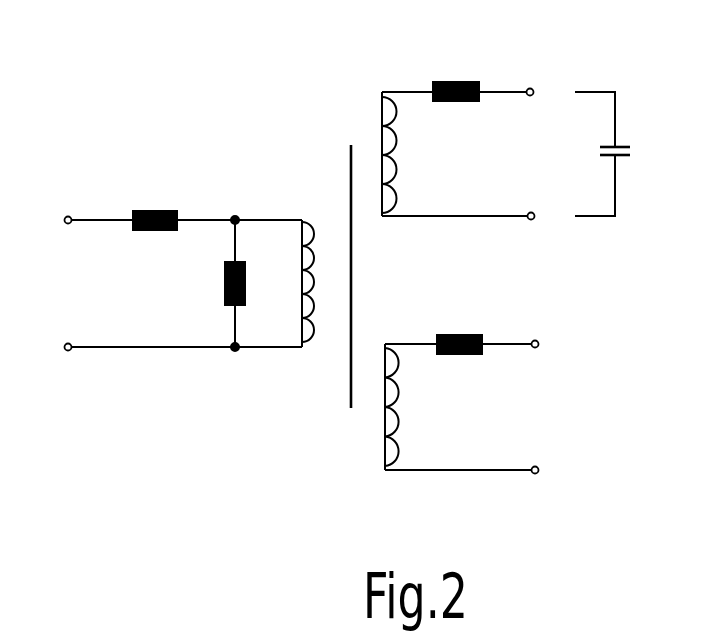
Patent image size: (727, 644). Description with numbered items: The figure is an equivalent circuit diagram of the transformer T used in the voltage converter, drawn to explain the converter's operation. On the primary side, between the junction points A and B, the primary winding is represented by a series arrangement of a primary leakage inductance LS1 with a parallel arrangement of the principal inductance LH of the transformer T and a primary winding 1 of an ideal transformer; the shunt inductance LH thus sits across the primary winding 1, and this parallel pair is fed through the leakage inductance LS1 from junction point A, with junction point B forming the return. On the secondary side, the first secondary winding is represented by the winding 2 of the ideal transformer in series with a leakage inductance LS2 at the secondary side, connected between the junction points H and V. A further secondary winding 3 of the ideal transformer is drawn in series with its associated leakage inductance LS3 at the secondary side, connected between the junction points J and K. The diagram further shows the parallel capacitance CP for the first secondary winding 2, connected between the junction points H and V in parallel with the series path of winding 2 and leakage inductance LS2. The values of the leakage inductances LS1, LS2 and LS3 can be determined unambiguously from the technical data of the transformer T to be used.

The primary winding 1 is at (305, 273).
The first secondary winding 2 is at (392, 172).
The further secondary winding 3 is at (399, 408).
The transformer T is at (344, 240).
The primary leakage inductance LS1 is at (217, 196).
The leakage inductance at the secondary side LS2 is at (479, 66).
The leakage inductance at the secondary side LS3 is at (484, 320).
The principal inductance LH is at (212, 283).
The parallel capacitance CP is at (621, 154).
The junction point A is at (85, 219).
The junction point B is at (170, 349).
The junction point H is at (545, 89).
The junction point V is at (546, 221).
The junction point J is at (546, 346).
The junction point K is at (550, 473).